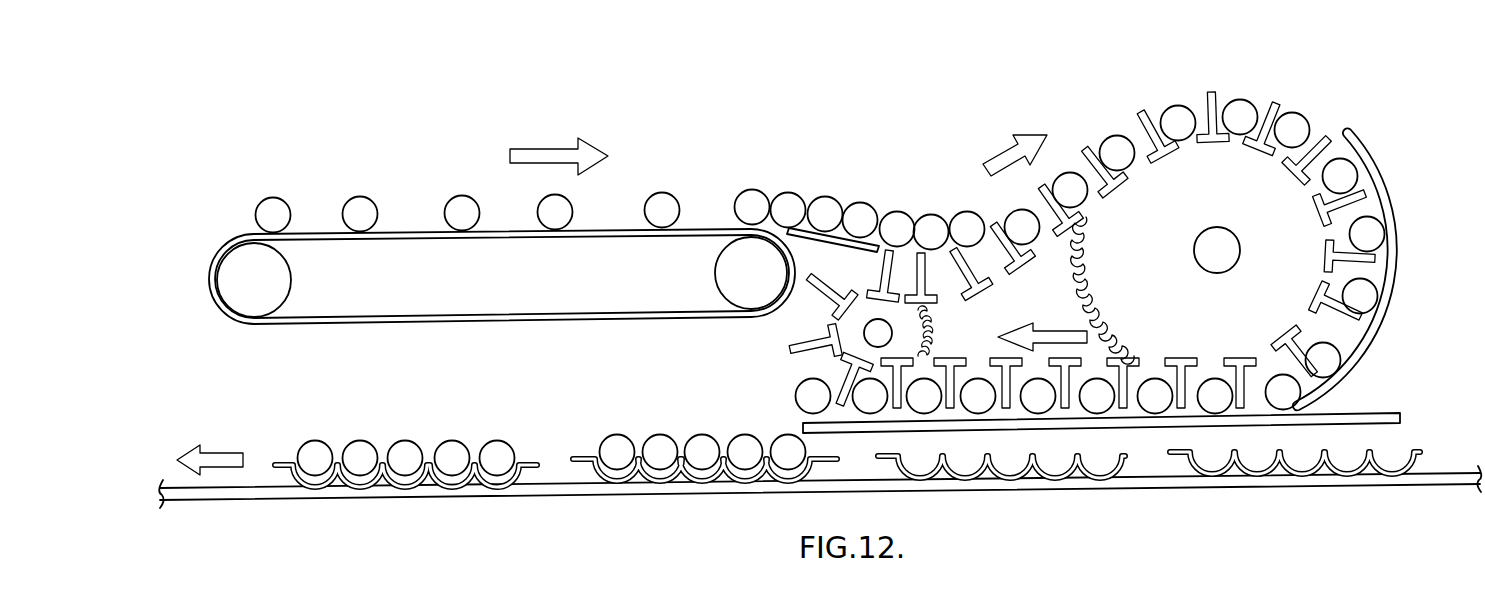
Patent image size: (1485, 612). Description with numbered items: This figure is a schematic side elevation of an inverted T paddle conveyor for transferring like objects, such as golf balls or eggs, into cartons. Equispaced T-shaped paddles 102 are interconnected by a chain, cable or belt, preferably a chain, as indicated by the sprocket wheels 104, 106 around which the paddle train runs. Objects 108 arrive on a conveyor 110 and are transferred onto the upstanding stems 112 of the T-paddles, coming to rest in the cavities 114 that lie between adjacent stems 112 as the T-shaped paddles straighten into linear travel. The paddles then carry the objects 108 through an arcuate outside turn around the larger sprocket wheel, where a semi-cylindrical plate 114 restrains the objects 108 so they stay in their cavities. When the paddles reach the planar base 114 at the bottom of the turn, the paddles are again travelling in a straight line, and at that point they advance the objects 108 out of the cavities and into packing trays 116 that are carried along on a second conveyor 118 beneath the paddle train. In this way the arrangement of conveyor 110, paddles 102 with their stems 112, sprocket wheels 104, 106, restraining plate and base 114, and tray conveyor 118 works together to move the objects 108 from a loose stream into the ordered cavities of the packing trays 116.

The T-shaped paddle 102 is at (1155, 108).
The sprocket wheel 104 is at (1085, 305).
The sprocket wheel 106 is at (928, 340).
The object 108 is at (672, 191).
The conveyor 110 is at (559, 318).
The upstanding stem 112 is at (1092, 140).
The cavity / semi-cylindrical plate / planar base 114 is at (1000, 210).
The packing tray 116 is at (695, 478).
The conveyor 118 is at (765, 485).